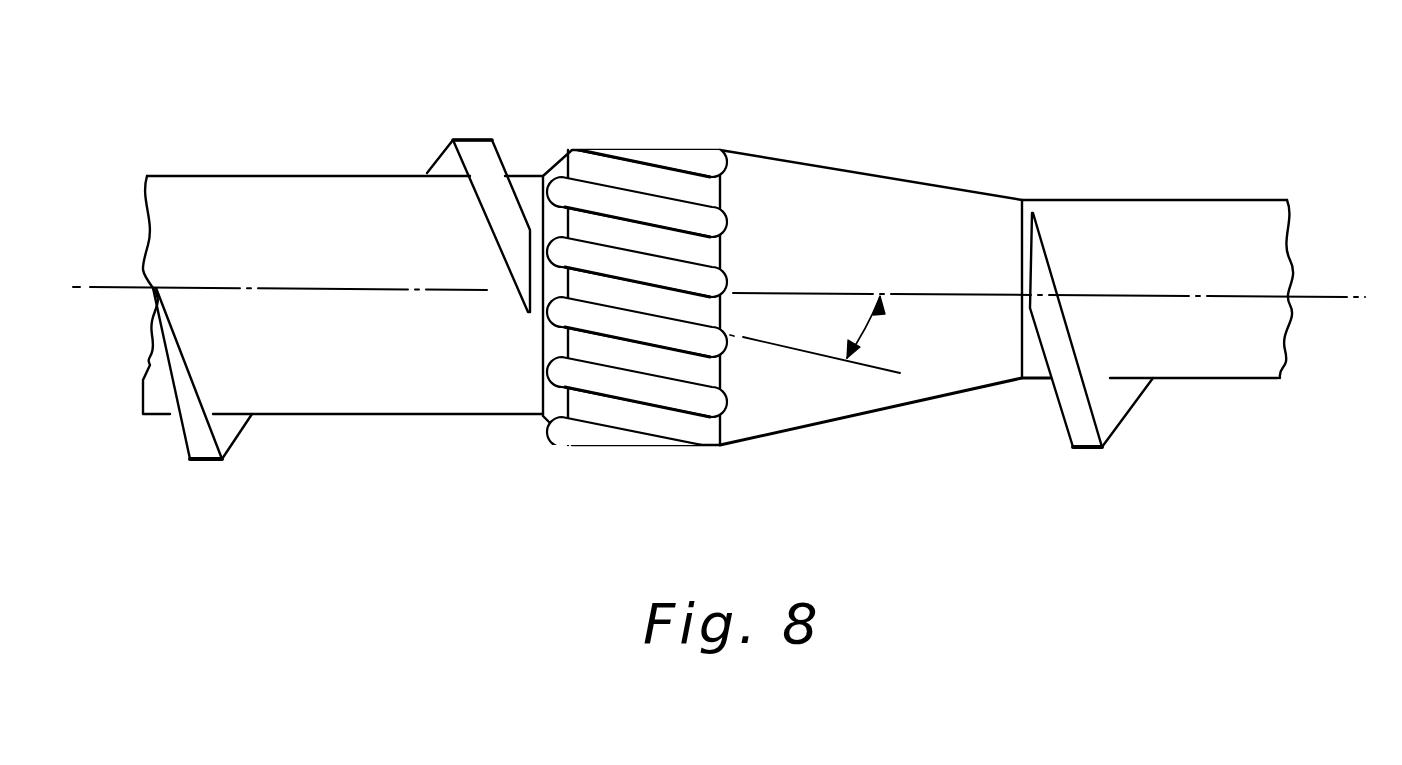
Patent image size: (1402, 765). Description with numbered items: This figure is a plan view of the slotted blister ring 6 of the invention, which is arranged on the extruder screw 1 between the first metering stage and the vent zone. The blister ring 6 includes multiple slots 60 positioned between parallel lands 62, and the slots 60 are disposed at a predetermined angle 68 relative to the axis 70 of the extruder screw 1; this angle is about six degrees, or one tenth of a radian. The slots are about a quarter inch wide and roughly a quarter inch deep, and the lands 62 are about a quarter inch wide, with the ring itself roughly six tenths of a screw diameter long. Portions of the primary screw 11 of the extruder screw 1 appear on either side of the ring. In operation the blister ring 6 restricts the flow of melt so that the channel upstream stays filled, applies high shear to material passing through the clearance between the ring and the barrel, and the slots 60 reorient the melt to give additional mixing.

The extruder screw 1 is at (250, 120).
The blister ring 6 is at (638, 120).
The slots 60 is at (720, 300).
The lands 62 is at (563, 320).
The angle 68 is at (827, 334).
The axis 70 is at (1312, 297).
The primary screw 11 is at (205, 459).